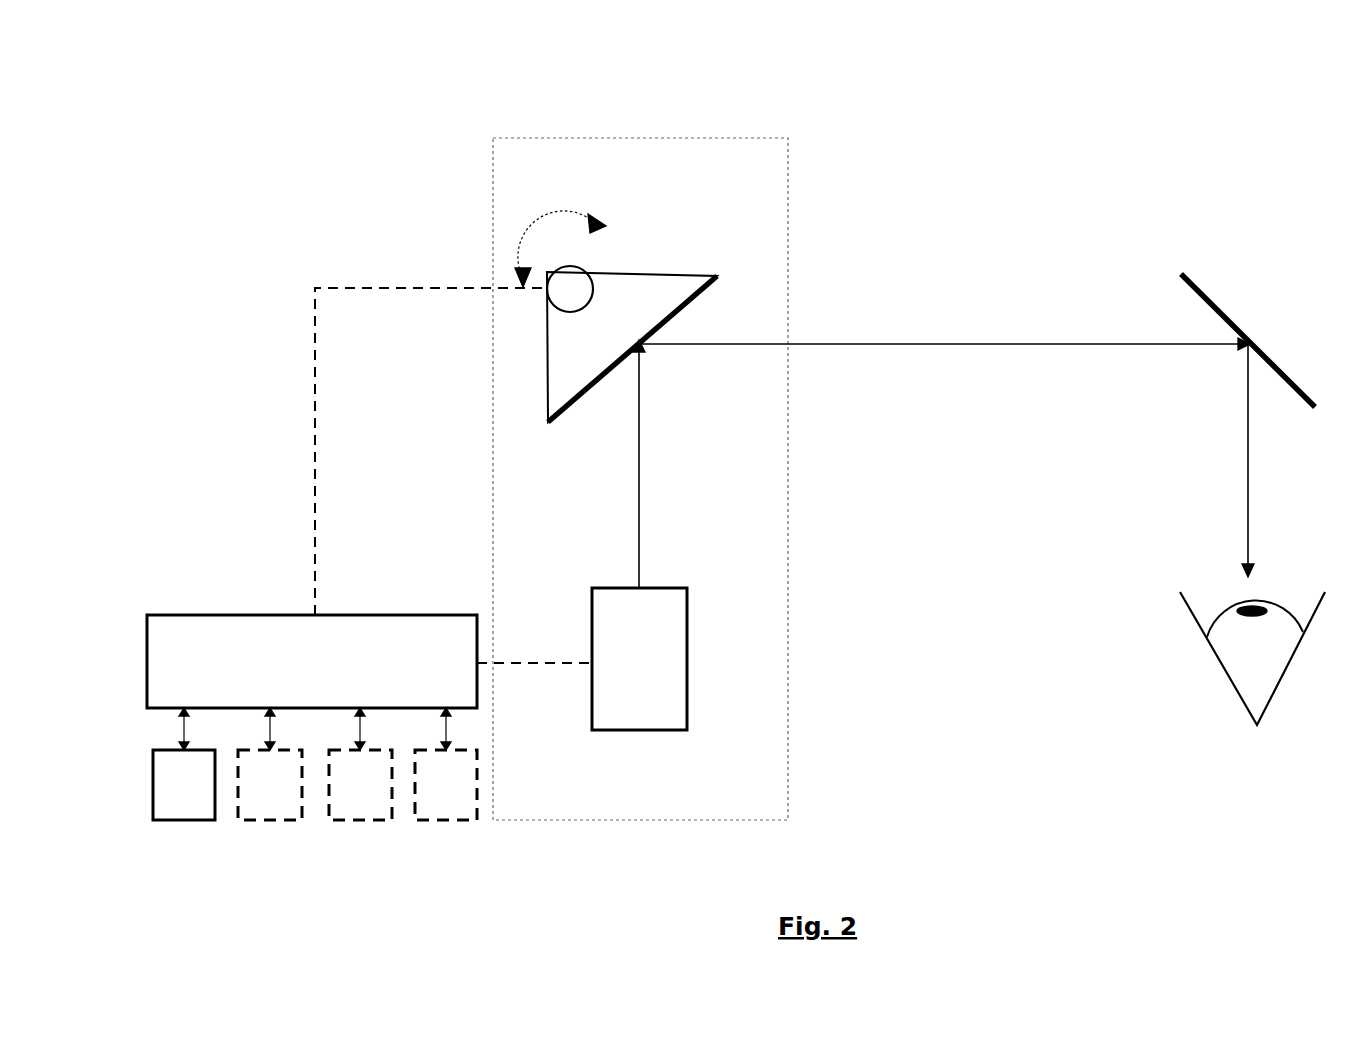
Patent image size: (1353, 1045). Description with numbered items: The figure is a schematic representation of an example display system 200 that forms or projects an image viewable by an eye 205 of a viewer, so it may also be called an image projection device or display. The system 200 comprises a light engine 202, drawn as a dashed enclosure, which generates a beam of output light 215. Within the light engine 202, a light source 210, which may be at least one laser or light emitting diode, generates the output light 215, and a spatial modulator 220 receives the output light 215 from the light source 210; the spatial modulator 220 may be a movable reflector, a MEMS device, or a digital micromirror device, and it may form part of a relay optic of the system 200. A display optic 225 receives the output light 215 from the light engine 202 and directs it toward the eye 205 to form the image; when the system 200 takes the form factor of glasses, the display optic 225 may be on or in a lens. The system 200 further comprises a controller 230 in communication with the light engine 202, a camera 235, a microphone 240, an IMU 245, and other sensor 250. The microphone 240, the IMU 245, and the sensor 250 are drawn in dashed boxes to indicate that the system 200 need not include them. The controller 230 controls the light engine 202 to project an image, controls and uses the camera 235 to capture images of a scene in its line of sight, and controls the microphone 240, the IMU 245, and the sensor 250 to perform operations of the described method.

The system 200 is at (1060, 92).
The light engine 202 is at (595, 137).
The eye 205 is at (1220, 667).
The light source 210 is at (639, 659).
The output light 215 is at (927, 343).
The spatial modulator 220 is at (652, 268).
The display optic 225 is at (1212, 297).
The controller 230 is at (369, 498).
The camera 235 is at (184, 764).
The microphone 240 is at (270, 764).
The IMU 245 is at (360, 764).
The sensor 250 is at (446, 764).